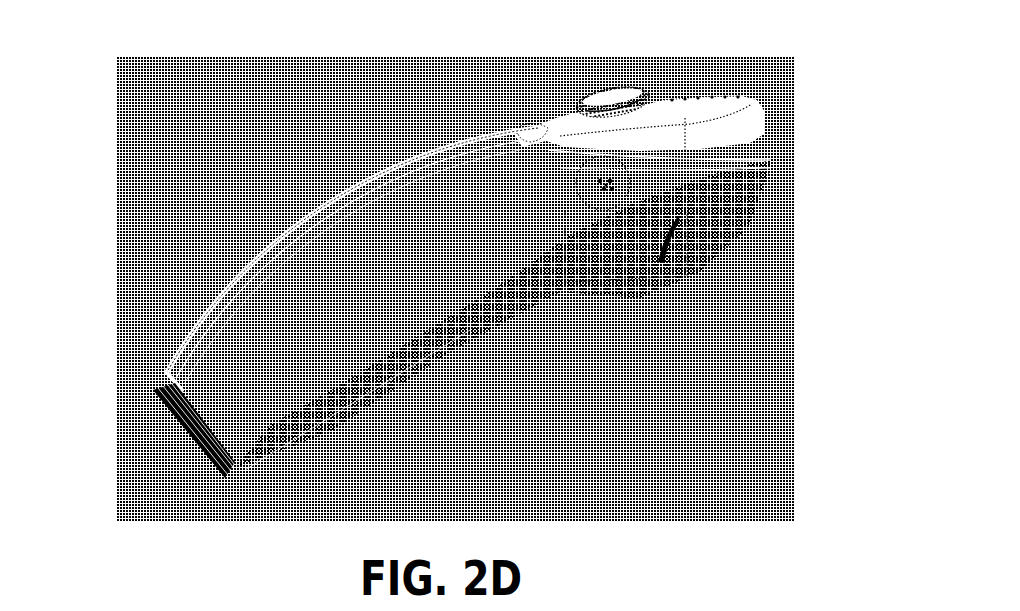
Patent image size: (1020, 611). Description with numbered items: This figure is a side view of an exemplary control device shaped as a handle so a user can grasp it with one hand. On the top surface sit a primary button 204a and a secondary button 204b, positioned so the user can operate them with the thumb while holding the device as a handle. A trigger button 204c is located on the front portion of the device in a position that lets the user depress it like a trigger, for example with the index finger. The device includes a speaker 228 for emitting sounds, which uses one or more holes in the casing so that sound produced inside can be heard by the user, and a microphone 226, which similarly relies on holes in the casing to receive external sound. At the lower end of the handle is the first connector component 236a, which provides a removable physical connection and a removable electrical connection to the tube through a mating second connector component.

The button / actuator on cap 204a is at (617, 95).
The side edge strip of housing 204b is at (530, 113).
The latch / release tab 204c is at (667, 243).
The port with vent holes 226 is at (606, 192).
The serrated top edge of cap 228 is at (702, 113).
The bristles / brush end 236a is at (152, 412).